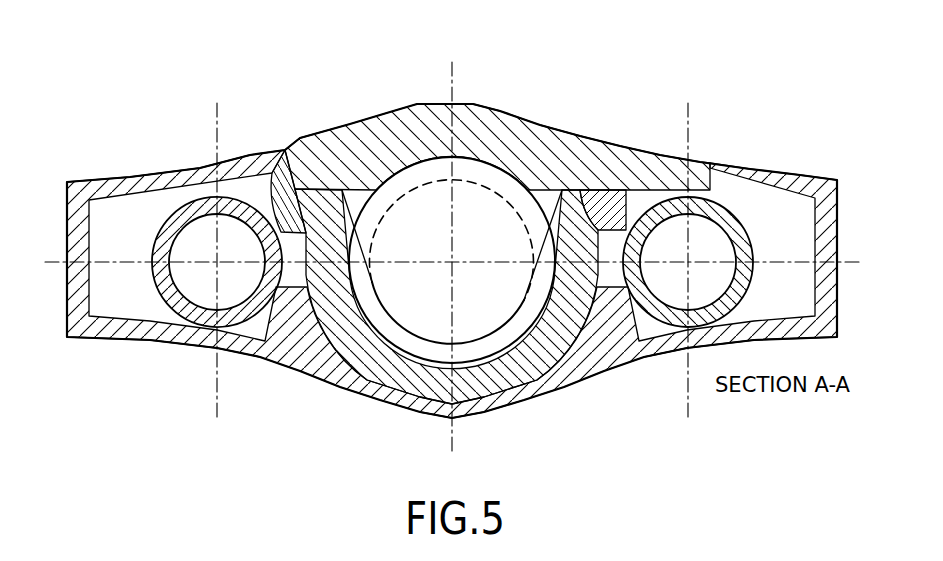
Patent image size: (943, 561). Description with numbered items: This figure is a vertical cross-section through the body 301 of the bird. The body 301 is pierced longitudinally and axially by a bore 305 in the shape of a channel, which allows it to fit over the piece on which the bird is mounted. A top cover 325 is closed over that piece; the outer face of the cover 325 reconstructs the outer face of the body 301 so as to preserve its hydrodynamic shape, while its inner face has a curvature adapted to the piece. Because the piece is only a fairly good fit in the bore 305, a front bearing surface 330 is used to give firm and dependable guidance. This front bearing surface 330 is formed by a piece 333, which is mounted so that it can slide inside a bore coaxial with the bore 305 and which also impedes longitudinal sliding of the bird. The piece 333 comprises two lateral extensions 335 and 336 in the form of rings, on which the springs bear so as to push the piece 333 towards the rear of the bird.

The body 301 is at (778, 182).
The top cover 325 is at (518, 132).
The front bearing surface 330 is at (484, 353).
The bore 305 is at (444, 260).
The piece 333 is at (352, 294).
The lateral extension 335 is at (740, 246).
The lateral extension 336 is at (168, 292).